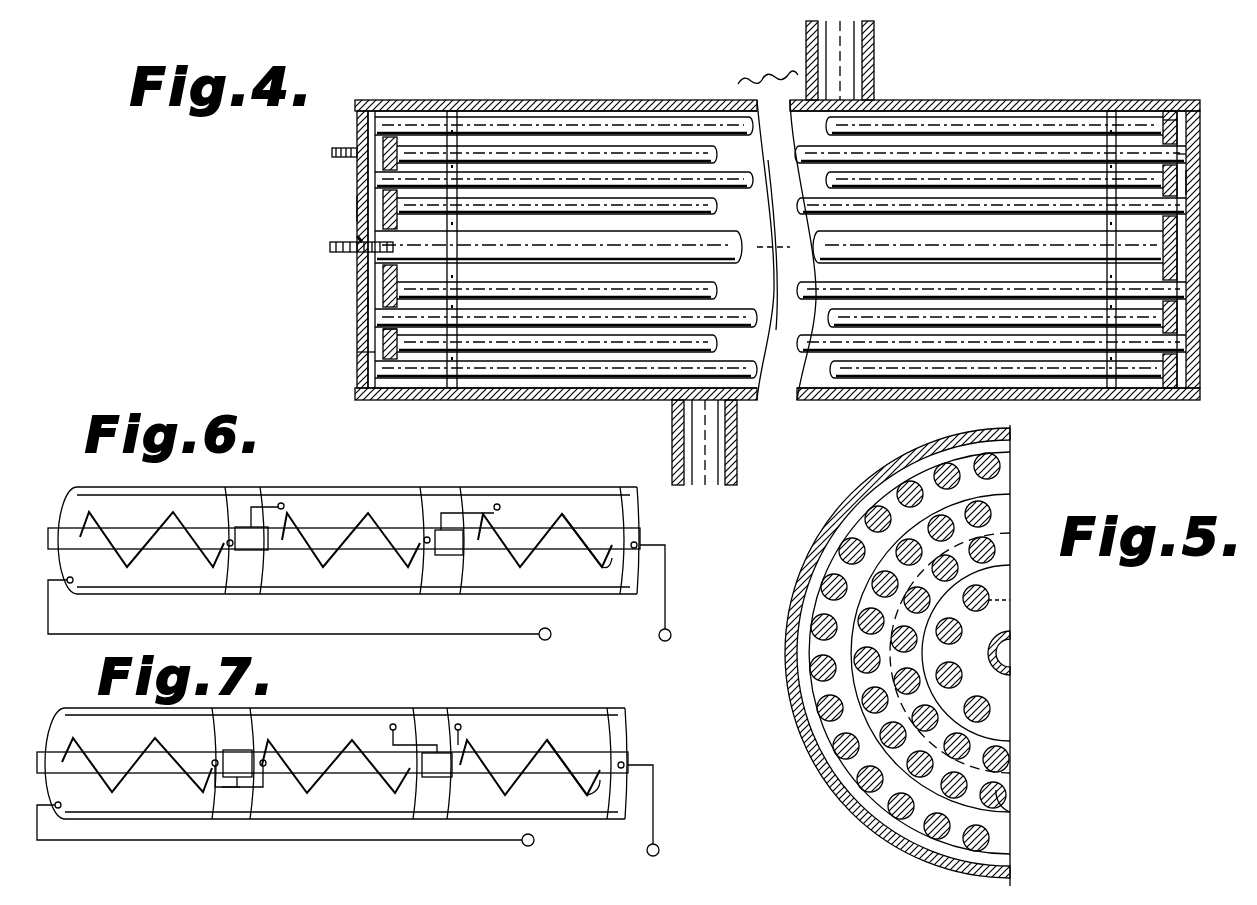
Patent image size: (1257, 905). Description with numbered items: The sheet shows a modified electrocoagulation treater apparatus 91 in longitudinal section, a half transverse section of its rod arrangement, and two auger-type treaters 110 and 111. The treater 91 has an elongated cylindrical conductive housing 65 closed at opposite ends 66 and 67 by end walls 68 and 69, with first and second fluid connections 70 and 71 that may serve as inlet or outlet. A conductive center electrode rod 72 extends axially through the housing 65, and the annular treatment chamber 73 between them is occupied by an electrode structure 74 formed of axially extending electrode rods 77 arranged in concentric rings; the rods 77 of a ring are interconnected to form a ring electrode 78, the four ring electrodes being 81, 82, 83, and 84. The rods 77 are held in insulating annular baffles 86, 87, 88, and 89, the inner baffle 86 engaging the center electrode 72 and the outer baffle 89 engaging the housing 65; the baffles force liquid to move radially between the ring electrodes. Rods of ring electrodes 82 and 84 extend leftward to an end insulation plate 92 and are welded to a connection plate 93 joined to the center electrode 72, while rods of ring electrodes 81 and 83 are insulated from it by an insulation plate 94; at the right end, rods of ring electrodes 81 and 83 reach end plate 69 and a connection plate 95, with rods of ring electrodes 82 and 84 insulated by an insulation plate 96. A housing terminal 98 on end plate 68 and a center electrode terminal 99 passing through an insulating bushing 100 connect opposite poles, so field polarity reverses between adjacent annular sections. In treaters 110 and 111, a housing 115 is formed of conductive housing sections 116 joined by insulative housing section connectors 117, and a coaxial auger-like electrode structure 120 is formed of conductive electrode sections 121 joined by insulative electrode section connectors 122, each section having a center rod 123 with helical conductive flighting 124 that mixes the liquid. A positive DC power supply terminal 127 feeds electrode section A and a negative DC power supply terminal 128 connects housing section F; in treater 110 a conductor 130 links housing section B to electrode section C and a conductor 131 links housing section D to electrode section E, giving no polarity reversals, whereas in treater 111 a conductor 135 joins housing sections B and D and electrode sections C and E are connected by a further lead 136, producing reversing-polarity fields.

In FIG. 4, the housing 65 is at (768, 400).
In FIG. 5, the housing 65 is at (1013, 436).
In FIG. 4, the first end of housing 66 is at (360, 100).
In FIG. 4, the second end of housing 67 is at (1193, 100).
In FIG. 4, the end wall 68 is at (357, 208).
In FIG. 4, the end wall 69 is at (1190, 180).
In FIG. 4, the first fluid connection 70 is at (674, 440).
In FIG. 4, the second fluid connection 71 is at (874, 58).
In FIG. 4, the center electrode rod 72 is at (390, 262).
In FIG. 5, the center electrode rod 72 is at (1016, 655).
In FIG. 4, the treatment chamber 73 is at (820, 278).
In FIG. 5, the treatment chamber 73 is at (1000, 606).
In FIG. 4, the electrode structure 74 is at (528, 392).
In FIG. 5, the electrode structure 74 is at (840, 540).
In FIG. 4, the electrode rods 77 is at (575, 350).
In FIG. 5, the electrode rods 77 is at (895, 810).
In FIG. 5, the ring electrode 78 is at (1005, 796).
In FIG. 4, the innermost ring electrode 81 is at (482, 205).
In FIG. 5, the innermost ring electrode 81 is at (1000, 705).
In FIG. 4, the ring electrode 82 is at (392, 178).
In FIG. 5, the ring electrode 82 is at (1005, 756).
In FIG. 4, the ring electrode 83 is at (540, 148).
In FIG. 5, the ring electrode 83 is at (990, 500).
In FIG. 4, the ring electrode 84 is at (492, 126).
In FIG. 5, the ring electrode 84 is at (1000, 468).
In FIG. 5, the inner baffle 86 is at (1005, 546).
In FIG. 5, the baffle 87 is at (912, 482).
In FIG. 5, the baffle 88 is at (805, 605).
In FIG. 4, the outer baffle 89 is at (455, 115).
In FIG. 5, the outer baffle 89 is at (855, 688).
In FIG. 4, the modified treater apparatus 91 is at (768, 50).
In FIG. 4, the end insulation plate 92 is at (368, 352).
In FIG. 4, the connection plate 93 is at (368, 302).
In FIG. 4, the insulation plate 94 is at (385, 335).
In FIG. 4, the connection plate 95 is at (1172, 164).
In FIG. 4, the insulation plate 96 is at (1172, 128).
In FIG. 4, the housing terminal 98 is at (332, 152).
In FIG. 4, the center electrode terminal 99 is at (330, 247).
In FIG. 4, the insulating bushing 100 is at (357, 238).
In FIG. 6, the treater 110 is at (326, 476).
In FIG. 7, the treater 111 is at (356, 698).
In FIG. 6, the housing 115 is at (366, 484).
In FIG. 7, the housing 115 is at (372, 706).
In FIG. 6, the conductive housing sections 116 is at (92, 487).
In FIG. 7, the conductive housing sections 116 is at (72, 708).
In FIG. 6, the insulative housing section connectors 117 is at (240, 596).
In FIG. 7, the insulative housing section connectors 117 is at (212, 736).
In FIG. 6, the electrode structure 120 is at (642, 532).
In FIG. 7, the electrode structure 120 is at (636, 758).
In FIG. 6, the conductive electrode sections 121 is at (76, 560).
In FIG. 7, the conductive electrode sections 121 is at (64, 778).
In FIG. 6, the insulative electrode section connectors 122 is at (232, 548).
In FIG. 7, the insulative electrode section connectors 122 is at (243, 750).
In FIG. 6, the center rod 123 is at (612, 560).
In FIG. 7, the center rod 123 is at (607, 752).
In FIG. 6, the conductive flighting 124 is at (565, 528).
In FIG. 7, the conductive flighting 124 is at (552, 748).
In FIG. 6, the positive DC power supply terminal 127 is at (671, 630).
In FIG. 7, the positive DC power supply terminal 127 is at (648, 855).
In FIG. 6, the negative DC power supply terminal 128 is at (548, 629).
In FIG. 7, the negative DC power supply terminal 128 is at (522, 846).
In FIG. 6, the conductor 130 is at (450, 492).
In FIG. 6, the conductor 131 is at (256, 487).
In FIG. 7, the conductor 135 is at (430, 752).
In FIG. 7, the lead 136 is at (222, 787).